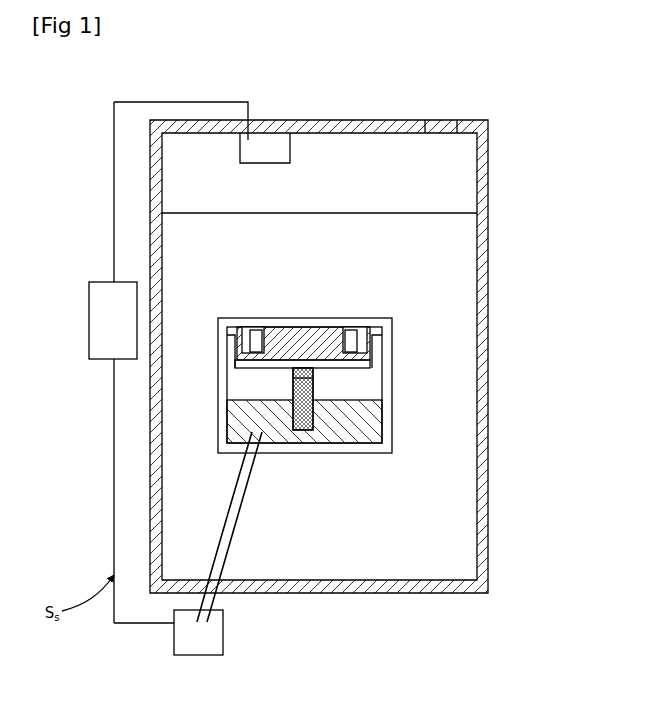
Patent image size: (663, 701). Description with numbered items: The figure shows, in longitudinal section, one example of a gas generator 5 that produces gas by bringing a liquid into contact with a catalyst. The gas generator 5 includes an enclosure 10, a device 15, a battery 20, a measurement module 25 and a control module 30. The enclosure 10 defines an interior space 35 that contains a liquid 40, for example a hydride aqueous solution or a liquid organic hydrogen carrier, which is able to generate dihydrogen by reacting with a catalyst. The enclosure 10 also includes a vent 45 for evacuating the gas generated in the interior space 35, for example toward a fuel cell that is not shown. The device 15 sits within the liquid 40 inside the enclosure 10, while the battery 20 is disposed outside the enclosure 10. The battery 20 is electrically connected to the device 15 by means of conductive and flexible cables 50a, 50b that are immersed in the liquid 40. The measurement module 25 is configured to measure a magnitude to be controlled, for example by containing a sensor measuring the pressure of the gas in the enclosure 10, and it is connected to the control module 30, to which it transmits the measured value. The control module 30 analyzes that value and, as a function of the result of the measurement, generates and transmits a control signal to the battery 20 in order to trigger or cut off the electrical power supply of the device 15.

The gas generator 5 is at (506, 132).
The enclosure 10 is at (489, 323).
The device 15 is at (373, 453).
The battery 20 is at (173, 638).
The measurement module 25 is at (262, 147).
The control module 30 is at (98, 320).
The interior space 35 is at (460, 513).
The liquid 40 is at (460, 420).
The vent 45 is at (439, 121).
The conductive and flexible cable 50a is at (245, 518).
The conductive and flexible cable 50b is at (226, 518).